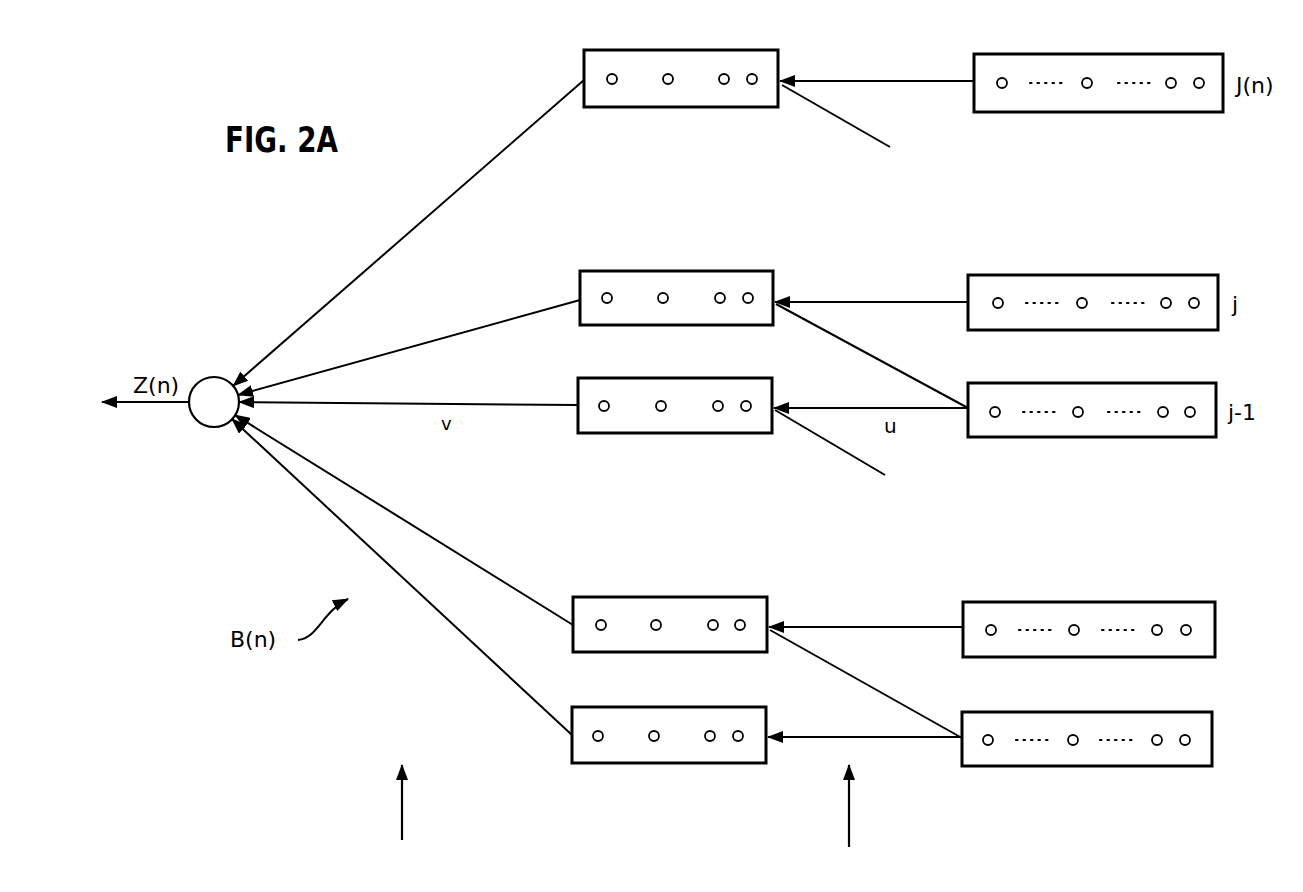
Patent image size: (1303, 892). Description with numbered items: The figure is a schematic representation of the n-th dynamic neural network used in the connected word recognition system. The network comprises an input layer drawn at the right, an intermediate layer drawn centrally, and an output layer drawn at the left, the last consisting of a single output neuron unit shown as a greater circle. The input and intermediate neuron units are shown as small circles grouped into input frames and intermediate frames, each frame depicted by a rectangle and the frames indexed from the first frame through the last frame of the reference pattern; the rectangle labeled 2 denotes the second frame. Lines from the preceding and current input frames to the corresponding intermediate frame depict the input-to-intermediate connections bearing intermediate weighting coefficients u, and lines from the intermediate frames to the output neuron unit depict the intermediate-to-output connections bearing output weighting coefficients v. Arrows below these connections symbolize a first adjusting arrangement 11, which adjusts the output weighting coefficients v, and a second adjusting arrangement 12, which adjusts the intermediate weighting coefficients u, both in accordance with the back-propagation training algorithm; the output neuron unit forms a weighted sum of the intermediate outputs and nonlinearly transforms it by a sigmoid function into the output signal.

The second row of neurons (row index 2) 2 is at (906, 627).
The first adjusting arrangement 11 is at (403, 808).
The second adjusting arrangement 12 is at (850, 815).